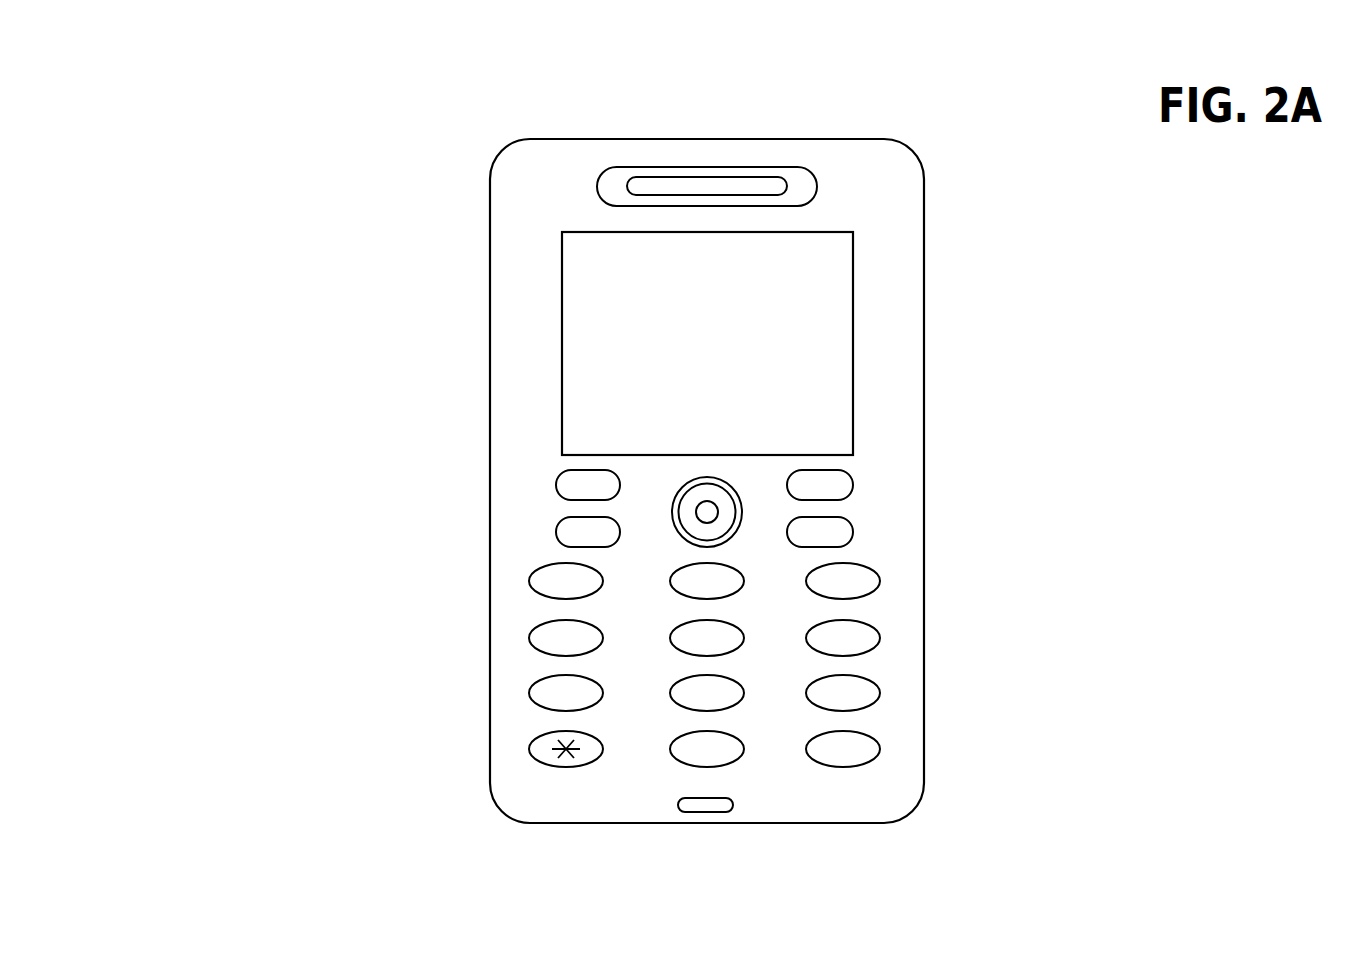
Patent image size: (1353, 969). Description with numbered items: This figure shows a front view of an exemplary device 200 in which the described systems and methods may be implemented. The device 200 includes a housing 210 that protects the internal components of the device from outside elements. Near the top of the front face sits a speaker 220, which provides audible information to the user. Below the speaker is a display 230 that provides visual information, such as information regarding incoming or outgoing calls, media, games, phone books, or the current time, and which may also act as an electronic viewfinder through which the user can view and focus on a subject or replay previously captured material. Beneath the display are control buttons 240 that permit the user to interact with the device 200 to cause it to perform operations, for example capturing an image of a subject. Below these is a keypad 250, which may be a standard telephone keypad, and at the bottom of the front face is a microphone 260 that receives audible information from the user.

The device 200 is at (203, 61).
The housing 210 is at (489, 478).
The speaker 220 is at (706, 168).
The display 230 is at (853, 342).
The control buttons 240 is at (870, 462).
The keypad 250 is at (892, 768).
The microphone 260 is at (708, 812).